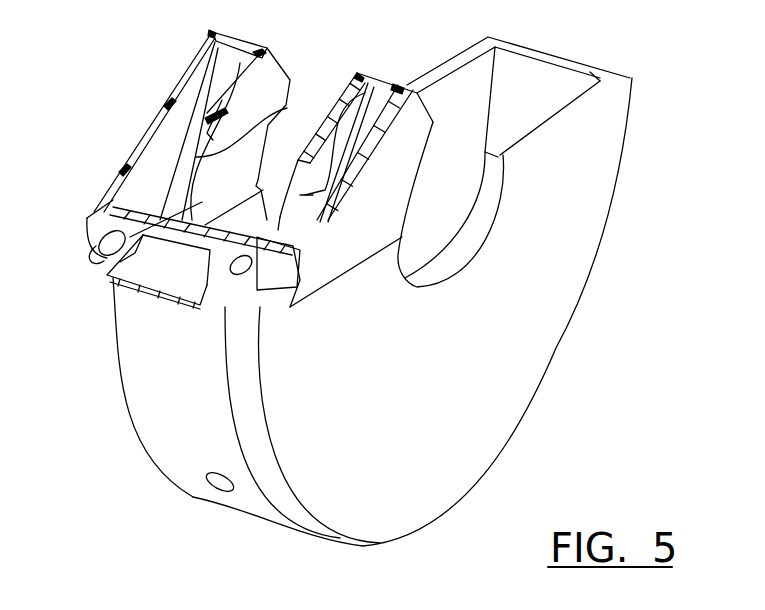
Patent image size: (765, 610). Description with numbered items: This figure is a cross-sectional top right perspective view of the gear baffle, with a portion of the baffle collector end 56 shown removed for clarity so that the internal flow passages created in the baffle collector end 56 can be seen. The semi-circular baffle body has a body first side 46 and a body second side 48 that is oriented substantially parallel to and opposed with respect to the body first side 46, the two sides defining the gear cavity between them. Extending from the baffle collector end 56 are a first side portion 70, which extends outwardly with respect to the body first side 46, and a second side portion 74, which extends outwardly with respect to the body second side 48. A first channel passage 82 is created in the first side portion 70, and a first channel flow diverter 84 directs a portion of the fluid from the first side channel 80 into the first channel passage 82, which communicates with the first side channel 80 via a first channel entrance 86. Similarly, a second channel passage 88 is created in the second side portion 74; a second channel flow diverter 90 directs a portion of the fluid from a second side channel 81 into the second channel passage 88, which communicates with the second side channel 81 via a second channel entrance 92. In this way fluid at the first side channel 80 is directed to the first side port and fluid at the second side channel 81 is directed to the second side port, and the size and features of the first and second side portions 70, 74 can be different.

The body first side 46 is at (453, 58).
The body second side 48 is at (587, 107).
The baffle collector end 56 is at (128, 105).
The first side portion 70 is at (110, 188).
The second side portion 74 is at (317, 227).
The first side channel 80 is at (284, 108).
The second side channel 81 is at (300, 195).
The first channel passage 82 is at (218, 70).
The first channel flow diverter 84 is at (182, 215).
The first channel entrance 86 is at (192, 158).
The second channel passage 88 is at (379, 103).
The second channel flow diverter 90 is at (295, 250).
The second channel entrance 92 is at (338, 140).